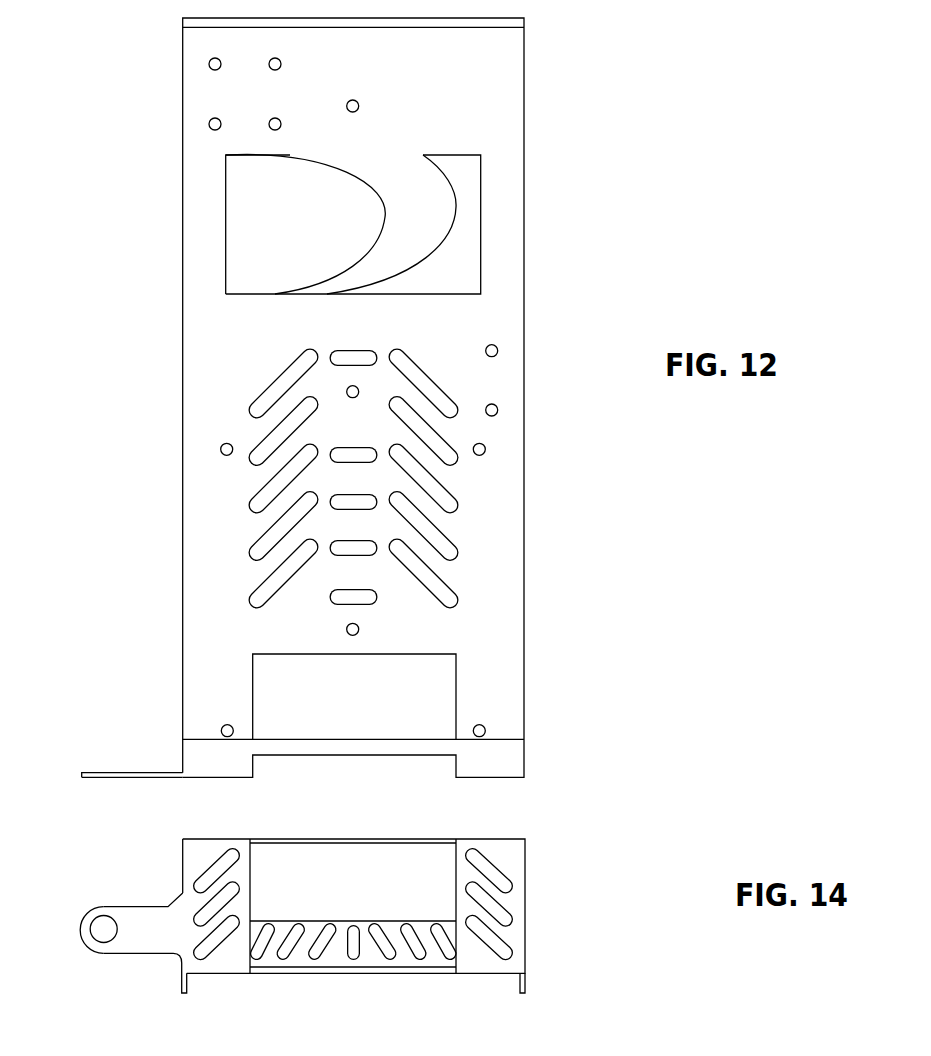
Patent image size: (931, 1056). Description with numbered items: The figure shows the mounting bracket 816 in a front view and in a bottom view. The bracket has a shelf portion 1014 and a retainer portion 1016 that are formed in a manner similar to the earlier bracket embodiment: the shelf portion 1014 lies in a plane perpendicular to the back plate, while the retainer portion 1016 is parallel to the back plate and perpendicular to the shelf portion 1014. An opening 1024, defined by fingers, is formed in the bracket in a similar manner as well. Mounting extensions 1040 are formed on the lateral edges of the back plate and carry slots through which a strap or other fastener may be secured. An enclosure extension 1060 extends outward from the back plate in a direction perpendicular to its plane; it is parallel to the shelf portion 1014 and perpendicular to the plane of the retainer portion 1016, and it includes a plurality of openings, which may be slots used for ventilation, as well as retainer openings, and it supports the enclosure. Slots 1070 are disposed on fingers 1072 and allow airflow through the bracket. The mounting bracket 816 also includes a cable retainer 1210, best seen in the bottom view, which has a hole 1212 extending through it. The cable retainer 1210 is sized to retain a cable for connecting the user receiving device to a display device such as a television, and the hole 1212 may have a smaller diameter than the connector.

In FIG. 12, the mounting bracket 816 is at (564, 43).
In FIG. 12, the retainer portion 1016 is at (508, 754).
In FIG. 14, the retainer portion 1016 is at (325, 839).
In FIG. 12, the opening 1024 is at (371, 706).
In FIG. 12, the hole 1212 is at (122, 772).
In FIG. 14, the hole 1212 is at (97, 918).
In FIG. 12, the cable retainer 1210 is at (122, 778).
In FIG. 14, the cable retainer 1210 is at (133, 935).
In FIG. 14, the shelf portion 1014 is at (515, 898).
In FIG. 14, the mounting extensions 1040 is at (188, 975).
In FIG. 14, the slots 1070 is at (500, 867).
In FIG. 14, the fingers 1072 is at (515, 930).
In FIG. 14, the enclosure extension 1060 is at (335, 955).